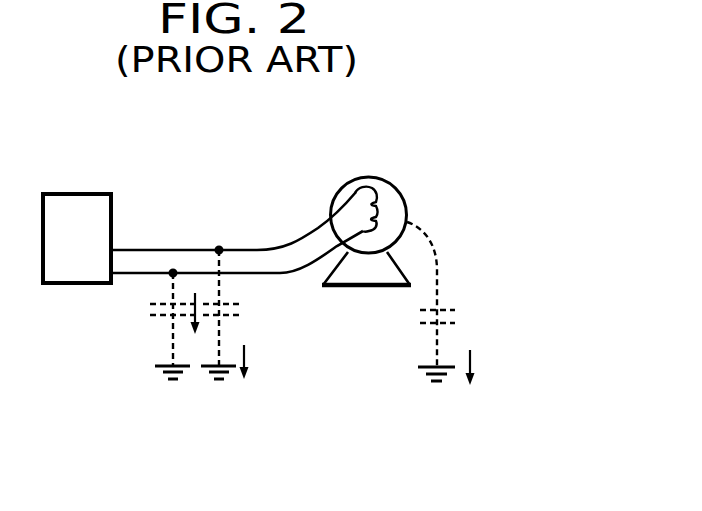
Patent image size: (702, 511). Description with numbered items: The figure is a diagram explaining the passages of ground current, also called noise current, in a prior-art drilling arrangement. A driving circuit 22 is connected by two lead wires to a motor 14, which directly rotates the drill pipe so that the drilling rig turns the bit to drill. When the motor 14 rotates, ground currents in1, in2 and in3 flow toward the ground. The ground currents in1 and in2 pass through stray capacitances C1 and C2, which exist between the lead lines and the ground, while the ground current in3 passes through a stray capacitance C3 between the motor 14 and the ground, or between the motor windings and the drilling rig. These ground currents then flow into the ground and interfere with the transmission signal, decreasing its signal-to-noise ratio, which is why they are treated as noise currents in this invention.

The driving circuit 22 is at (100, 192).
The motor 14 is at (394, 184).
The stray capacitance C1 is at (153, 326).
The stray capacitance C2 is at (239, 314).
The stray capacitance C3 is at (451, 301).
The ground current in1 is at (192, 322).
The ground current in2 is at (244, 362).
The ground current in3 is at (471, 358).